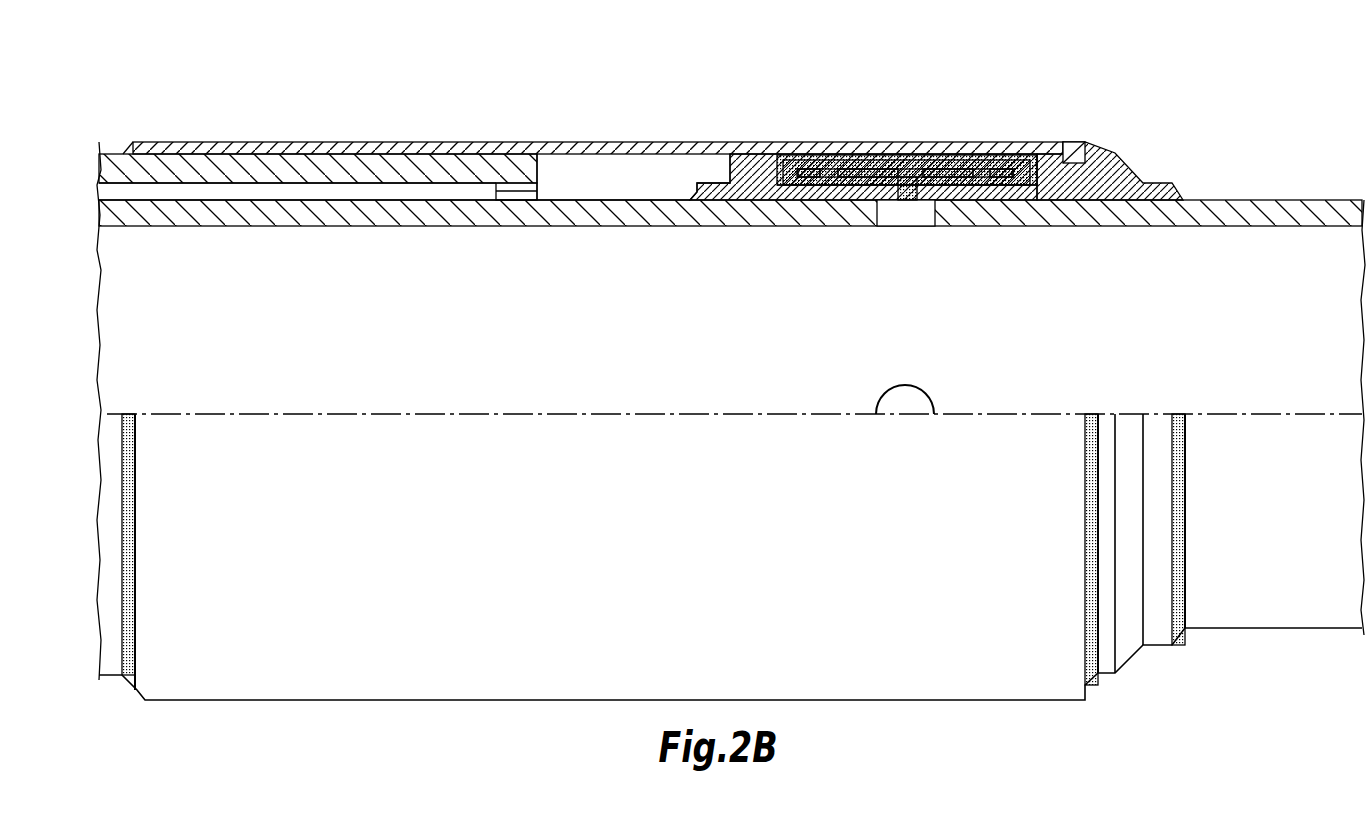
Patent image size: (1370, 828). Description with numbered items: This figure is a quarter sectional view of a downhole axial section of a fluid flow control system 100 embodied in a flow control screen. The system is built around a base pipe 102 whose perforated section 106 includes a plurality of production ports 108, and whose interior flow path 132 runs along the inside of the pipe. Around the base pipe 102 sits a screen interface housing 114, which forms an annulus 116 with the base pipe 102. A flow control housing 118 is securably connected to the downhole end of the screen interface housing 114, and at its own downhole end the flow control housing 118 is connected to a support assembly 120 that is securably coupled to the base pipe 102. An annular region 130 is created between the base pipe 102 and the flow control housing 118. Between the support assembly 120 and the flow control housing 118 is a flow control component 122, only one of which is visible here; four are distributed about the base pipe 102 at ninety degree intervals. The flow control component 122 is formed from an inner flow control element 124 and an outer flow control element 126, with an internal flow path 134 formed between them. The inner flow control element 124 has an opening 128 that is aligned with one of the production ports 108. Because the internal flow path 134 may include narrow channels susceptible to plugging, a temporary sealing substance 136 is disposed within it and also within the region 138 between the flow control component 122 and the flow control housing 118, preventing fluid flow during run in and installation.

The fluid flow control system 100 is at (1035, 68).
The base pipe 102 is at (282, 226).
The perforated section 106 is at (820, 220).
The production ports 108 is at (896, 215).
The screen interface housing 114 is at (203, 168).
The annulus 116 is at (440, 192).
The flow control housing 118 is at (480, 147).
The support assembly 120 is at (1125, 163).
The flow control component 122 is at (827, 152).
The inner flow control element 124 is at (1017, 187).
The outer flow control element 126 is at (978, 163).
The opening 128 is at (917, 175).
The annular region 130 is at (615, 187).
The interior flow path 132 is at (730, 523).
The internal flow path 134 is at (946, 165).
The temporary sealing substance 136 is at (871, 165).
The region 138 is at (797, 160).